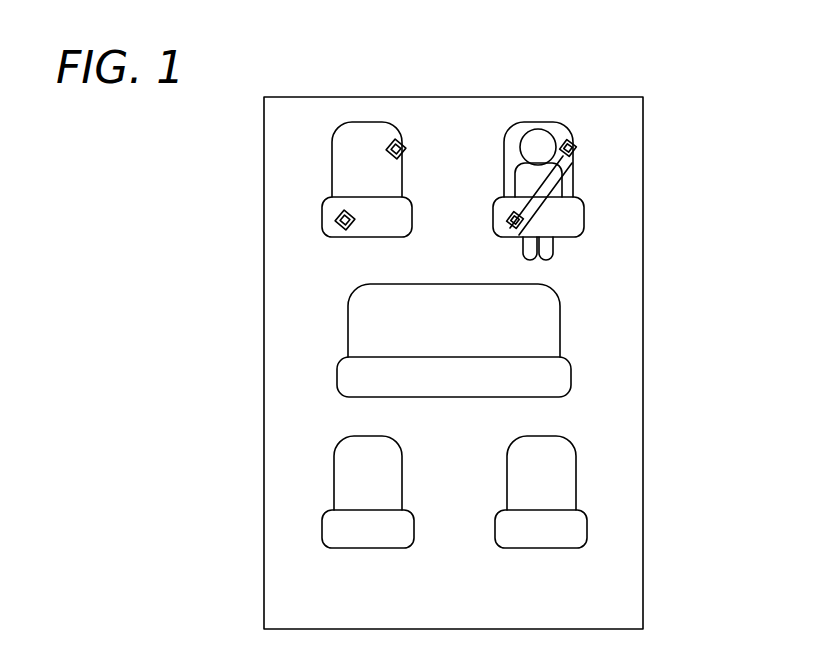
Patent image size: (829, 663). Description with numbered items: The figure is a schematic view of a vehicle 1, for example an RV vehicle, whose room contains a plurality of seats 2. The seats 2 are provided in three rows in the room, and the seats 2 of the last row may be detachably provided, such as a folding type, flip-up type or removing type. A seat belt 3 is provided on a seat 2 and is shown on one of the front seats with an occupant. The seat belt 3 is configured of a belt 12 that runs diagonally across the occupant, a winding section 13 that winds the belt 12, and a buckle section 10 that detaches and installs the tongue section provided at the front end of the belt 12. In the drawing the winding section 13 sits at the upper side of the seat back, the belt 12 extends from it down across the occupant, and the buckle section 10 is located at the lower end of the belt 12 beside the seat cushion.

The vehicle 1 is at (643, 325).
The seat 2 is at (322, 210).
The seat belt 3 is at (509, 120).
The buckle section 10 is at (510, 221).
The belt 12 is at (530, 196).
The winding section 13 is at (569, 142).